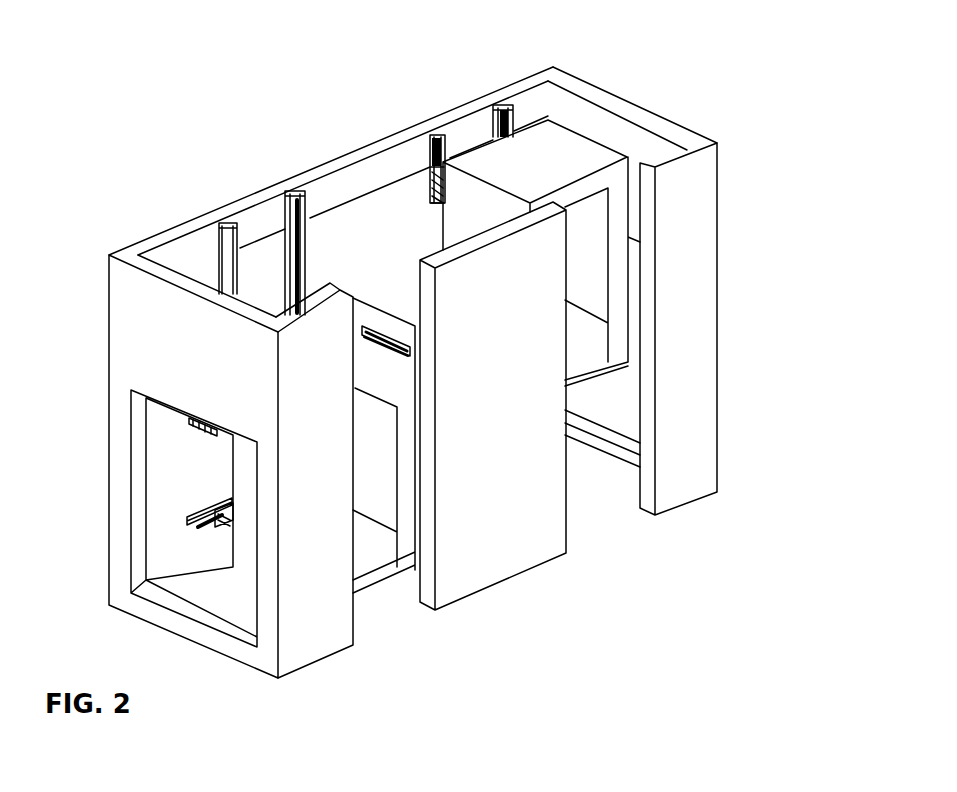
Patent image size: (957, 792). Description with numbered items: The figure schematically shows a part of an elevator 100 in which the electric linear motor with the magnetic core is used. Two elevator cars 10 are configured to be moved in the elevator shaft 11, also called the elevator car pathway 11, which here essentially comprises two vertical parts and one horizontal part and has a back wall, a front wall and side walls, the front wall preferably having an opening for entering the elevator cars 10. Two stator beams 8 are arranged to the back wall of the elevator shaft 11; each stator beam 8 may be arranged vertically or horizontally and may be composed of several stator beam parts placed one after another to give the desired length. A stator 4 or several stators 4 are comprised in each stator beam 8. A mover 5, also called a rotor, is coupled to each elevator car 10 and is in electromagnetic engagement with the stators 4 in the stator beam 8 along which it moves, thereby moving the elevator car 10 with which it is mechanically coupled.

The elevator 100 is at (178, 113).
The stator 4 is at (302, 240).
The mover 5 is at (438, 176).
The stator beam 8 is at (228, 223).
The elevator car 10 is at (602, 116).
The elevator shaft 11 is at (313, 187).